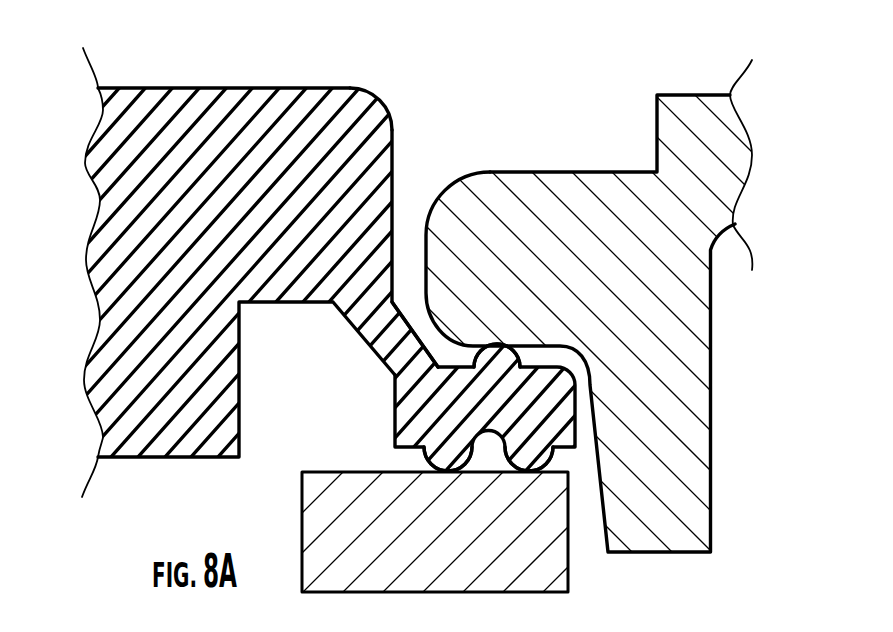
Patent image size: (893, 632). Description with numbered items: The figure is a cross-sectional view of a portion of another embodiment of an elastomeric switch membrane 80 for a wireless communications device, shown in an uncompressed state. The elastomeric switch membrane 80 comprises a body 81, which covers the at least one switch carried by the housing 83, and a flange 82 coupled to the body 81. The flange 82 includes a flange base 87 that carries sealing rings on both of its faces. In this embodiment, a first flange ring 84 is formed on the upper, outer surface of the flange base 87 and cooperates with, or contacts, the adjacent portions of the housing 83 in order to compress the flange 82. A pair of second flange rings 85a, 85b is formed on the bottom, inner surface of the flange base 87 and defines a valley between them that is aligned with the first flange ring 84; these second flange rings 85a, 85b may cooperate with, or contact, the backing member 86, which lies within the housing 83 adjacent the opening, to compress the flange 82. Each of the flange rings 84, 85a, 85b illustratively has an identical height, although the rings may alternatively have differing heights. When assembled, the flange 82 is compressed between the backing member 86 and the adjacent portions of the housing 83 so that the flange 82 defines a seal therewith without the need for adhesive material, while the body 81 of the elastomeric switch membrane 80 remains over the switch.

The elastomeric switch membrane 80 is at (292, 68).
The body 81 is at (386, 102).
The flange 82 is at (397, 407).
The housing 83 is at (600, 173).
The first flange ring 84 is at (503, 344).
The second flange ring 85a is at (453, 447).
The second flange ring 85b is at (530, 448).
The backing member 86 is at (568, 565).
The flange base 87 is at (413, 380).